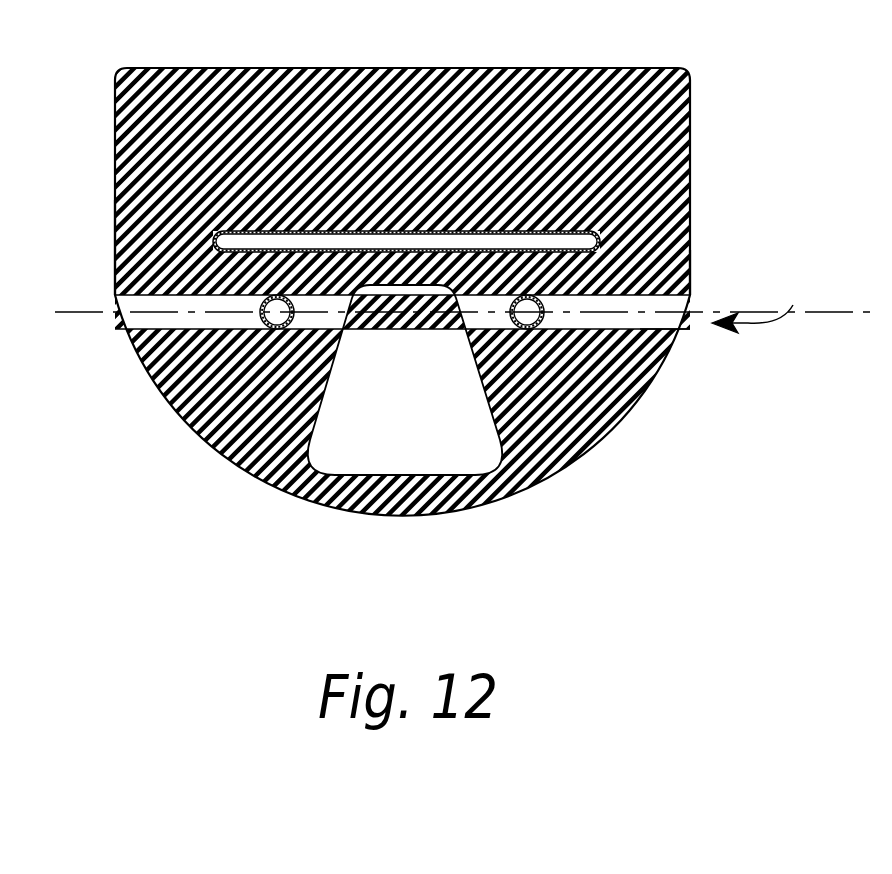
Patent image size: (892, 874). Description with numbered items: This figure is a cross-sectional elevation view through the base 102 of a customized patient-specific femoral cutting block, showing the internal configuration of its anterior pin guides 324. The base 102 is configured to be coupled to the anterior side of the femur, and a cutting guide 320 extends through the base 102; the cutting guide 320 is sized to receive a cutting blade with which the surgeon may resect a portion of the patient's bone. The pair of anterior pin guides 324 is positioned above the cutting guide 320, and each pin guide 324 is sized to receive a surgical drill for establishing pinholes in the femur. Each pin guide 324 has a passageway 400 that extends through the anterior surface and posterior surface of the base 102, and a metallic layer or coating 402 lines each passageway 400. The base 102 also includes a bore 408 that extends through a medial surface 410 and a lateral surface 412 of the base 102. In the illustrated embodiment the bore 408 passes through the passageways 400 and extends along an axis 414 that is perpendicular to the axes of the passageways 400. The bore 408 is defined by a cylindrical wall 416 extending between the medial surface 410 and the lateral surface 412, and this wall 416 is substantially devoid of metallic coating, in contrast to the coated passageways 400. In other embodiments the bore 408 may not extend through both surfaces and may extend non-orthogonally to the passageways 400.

The base 102 is at (546, 66).
The cutting guide 320 is at (588, 236).
The anterior pin guide 324 is at (290, 317).
The passageway 400 is at (262, 313).
The metallic layer or coating 402 is at (277, 329).
The bore 408 is at (770, 309).
The medial surface 410 is at (113, 242).
The lateral surface 412 is at (690, 287).
The axis 414 is at (747, 311).
The cylindrical wall 416 is at (672, 323).